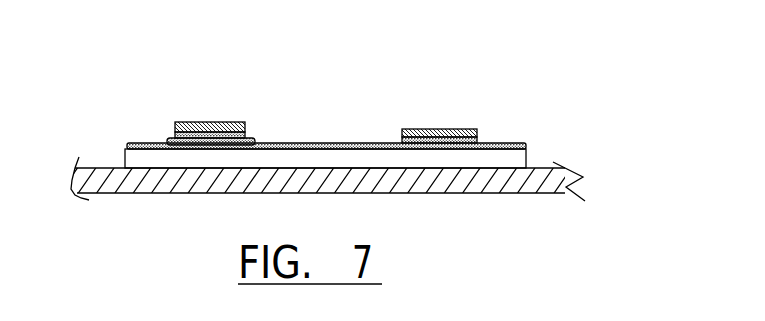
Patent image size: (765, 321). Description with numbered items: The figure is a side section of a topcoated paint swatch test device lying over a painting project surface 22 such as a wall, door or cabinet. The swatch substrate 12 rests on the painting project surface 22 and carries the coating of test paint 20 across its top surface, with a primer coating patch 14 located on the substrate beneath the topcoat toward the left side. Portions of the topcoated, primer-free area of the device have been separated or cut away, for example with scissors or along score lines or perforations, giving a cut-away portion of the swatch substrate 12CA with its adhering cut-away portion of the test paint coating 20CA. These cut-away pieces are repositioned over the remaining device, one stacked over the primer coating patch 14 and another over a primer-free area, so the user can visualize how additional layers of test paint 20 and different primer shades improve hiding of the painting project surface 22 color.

The painting project surface 22 is at (553, 189).
The swatch substrate 12 is at (511, 160).
The coating of test paint 20 is at (528, 142).
The primer coating patches 14 is at (234, 134).
The cut-away portion of the swatch substrate 12CA is at (220, 132).
The cut-away portion of the test paint coating 20CA is at (198, 122).